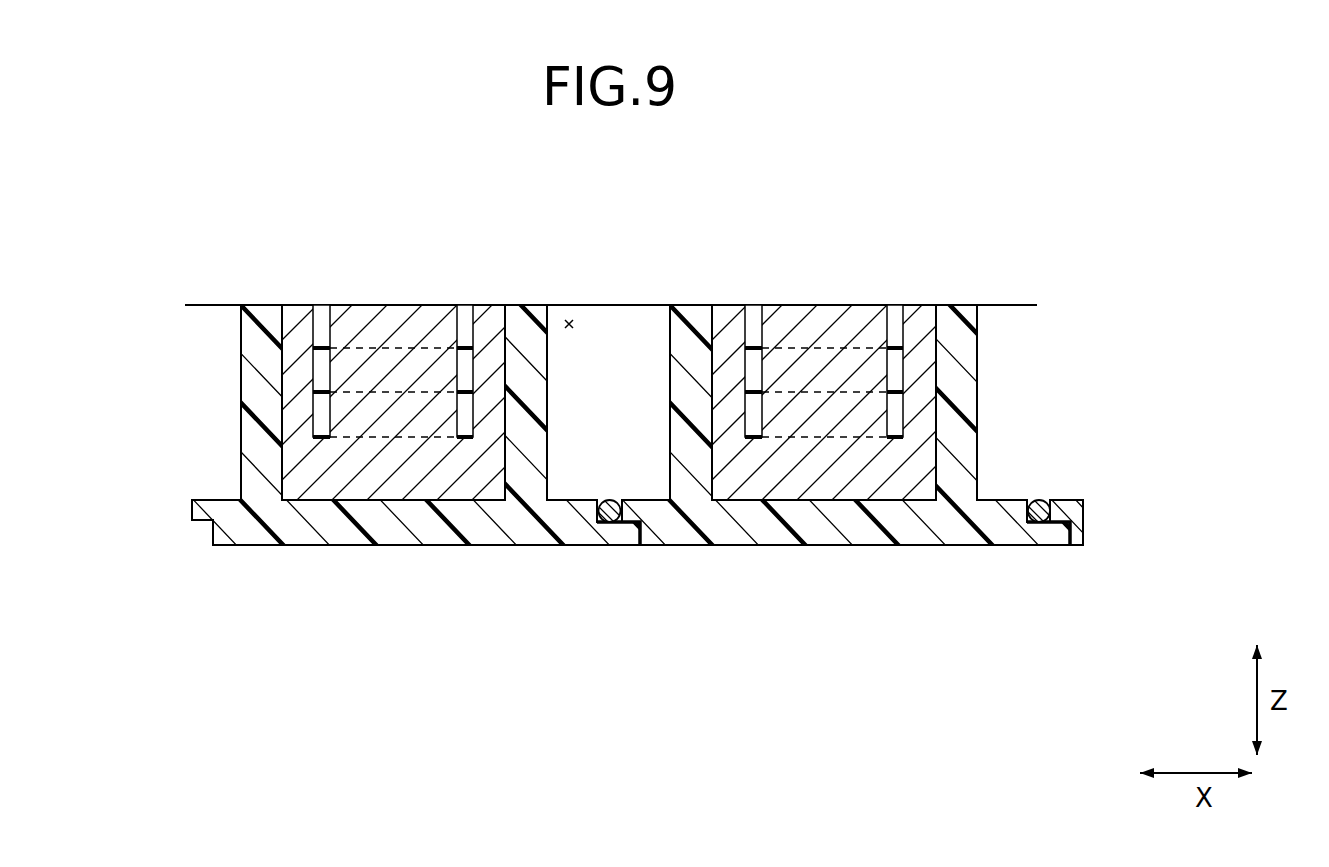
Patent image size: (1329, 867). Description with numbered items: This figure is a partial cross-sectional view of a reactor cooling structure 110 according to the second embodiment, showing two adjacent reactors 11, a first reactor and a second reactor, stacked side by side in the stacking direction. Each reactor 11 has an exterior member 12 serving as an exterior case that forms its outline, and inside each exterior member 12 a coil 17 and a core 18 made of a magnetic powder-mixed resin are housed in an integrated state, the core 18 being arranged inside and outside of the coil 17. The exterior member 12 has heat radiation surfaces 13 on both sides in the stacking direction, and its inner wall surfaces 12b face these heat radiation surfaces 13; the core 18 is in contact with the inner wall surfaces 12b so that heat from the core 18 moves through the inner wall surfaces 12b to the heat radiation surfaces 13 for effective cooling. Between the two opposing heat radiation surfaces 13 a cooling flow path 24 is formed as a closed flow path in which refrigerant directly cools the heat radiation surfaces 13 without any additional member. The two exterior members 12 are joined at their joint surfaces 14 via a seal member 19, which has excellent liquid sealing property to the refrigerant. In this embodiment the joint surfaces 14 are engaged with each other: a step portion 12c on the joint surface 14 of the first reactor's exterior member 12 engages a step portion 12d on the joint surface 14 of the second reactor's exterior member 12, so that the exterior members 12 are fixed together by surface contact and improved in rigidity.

The reactor cooling structure 110 is at (1080, 215).
The reactor 11 is at (300, 292).
The exterior member 12 is at (372, 549).
The inner wall surface 12b is at (282, 473).
The step portion 12c is at (202, 520).
The step portion 12d is at (620, 537).
The joint surface 14 is at (686, 578).
The heat radiation surface 13 is at (668, 386).
The coil 17 is at (381, 300).
The core 18 is at (484, 318).
The seal member 19 is at (600, 523).
The cooling flow path 24 is at (569, 322).